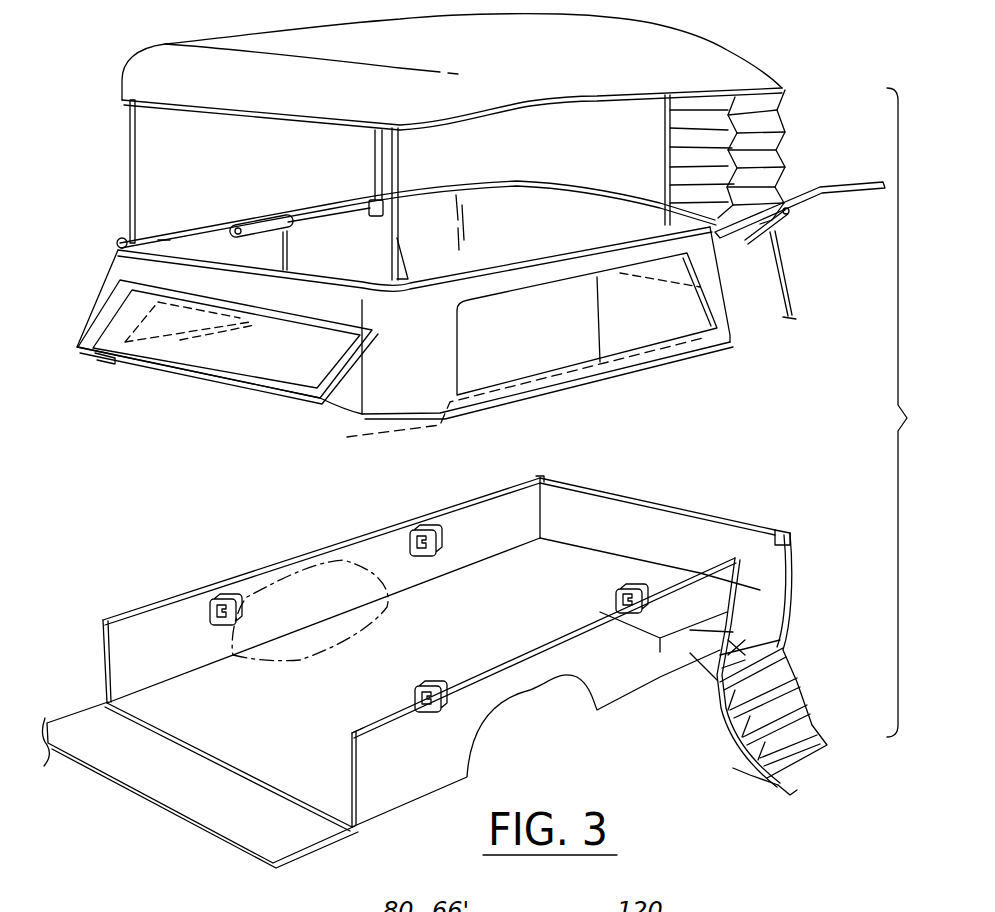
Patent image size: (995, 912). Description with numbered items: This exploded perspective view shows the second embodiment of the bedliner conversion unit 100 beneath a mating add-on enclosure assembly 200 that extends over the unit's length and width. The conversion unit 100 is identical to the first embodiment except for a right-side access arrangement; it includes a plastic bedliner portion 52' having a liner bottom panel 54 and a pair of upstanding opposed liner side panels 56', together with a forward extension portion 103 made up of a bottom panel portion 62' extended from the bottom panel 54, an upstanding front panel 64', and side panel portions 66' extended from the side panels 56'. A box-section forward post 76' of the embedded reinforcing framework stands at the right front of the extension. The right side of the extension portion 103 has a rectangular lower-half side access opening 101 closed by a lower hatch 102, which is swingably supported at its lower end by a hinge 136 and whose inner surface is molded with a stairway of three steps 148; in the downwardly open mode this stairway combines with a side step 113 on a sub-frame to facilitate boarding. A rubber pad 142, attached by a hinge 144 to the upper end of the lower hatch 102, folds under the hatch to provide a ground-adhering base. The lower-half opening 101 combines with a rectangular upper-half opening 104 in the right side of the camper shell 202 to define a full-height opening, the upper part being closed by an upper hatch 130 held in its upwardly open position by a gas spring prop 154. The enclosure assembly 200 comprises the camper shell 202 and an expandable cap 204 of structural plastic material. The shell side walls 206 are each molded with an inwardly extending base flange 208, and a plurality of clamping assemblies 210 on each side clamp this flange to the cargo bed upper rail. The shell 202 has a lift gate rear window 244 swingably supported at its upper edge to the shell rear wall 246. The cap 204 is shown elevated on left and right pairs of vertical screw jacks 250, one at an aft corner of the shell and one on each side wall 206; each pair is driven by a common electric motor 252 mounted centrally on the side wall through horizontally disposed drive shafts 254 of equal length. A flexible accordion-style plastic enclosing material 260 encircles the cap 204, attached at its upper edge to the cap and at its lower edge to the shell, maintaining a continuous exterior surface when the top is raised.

The add-on enclosure assembly 200 is at (463, 227).
The expandable cap 204 is at (122, 63).
The flexible plastic enclosing material 260 is at (783, 117).
The vertical screw jacks 250 is at (128, 155).
The electric motor 252 is at (250, 212).
The drive shaft 254 is at (334, 208).
The shell side walls 206 is at (268, 212).
The camper shell 202 is at (100, 291).
The lift gate rear window 244 is at (247, 352).
The inwardly extending base flange 208 is at (501, 394).
The rear wall 246 is at (263, 286).
The upper hatch 130 is at (833, 179).
The gas spring prop 154 is at (767, 232).
The upper-half opening 104 is at (788, 298).
The conversion unit 100 is at (466, 629).
The liner side panels 56' is at (321, 590).
The plastic bedliner portion 52' is at (321, 551).
The side panel portions 66' is at (583, 460).
The upstanding front panel 64' is at (650, 490).
The bottom panel portion 62' is at (462, 587).
The liner bottom panel 54 is at (243, 722).
The conversion unit extension portion 103 is at (667, 494).
The side access lower-half opening 101 is at (778, 555).
The forward post 76' is at (819, 655).
The steps 148 is at (810, 694).
The hinge 136 is at (730, 645).
The rubber pad 142 is at (750, 767).
The hinge 144 is at (780, 786).
The side step 113 is at (722, 642).
The lower hatch 102 is at (718, 731).
The clamping assemblies 210 is at (399, 694).